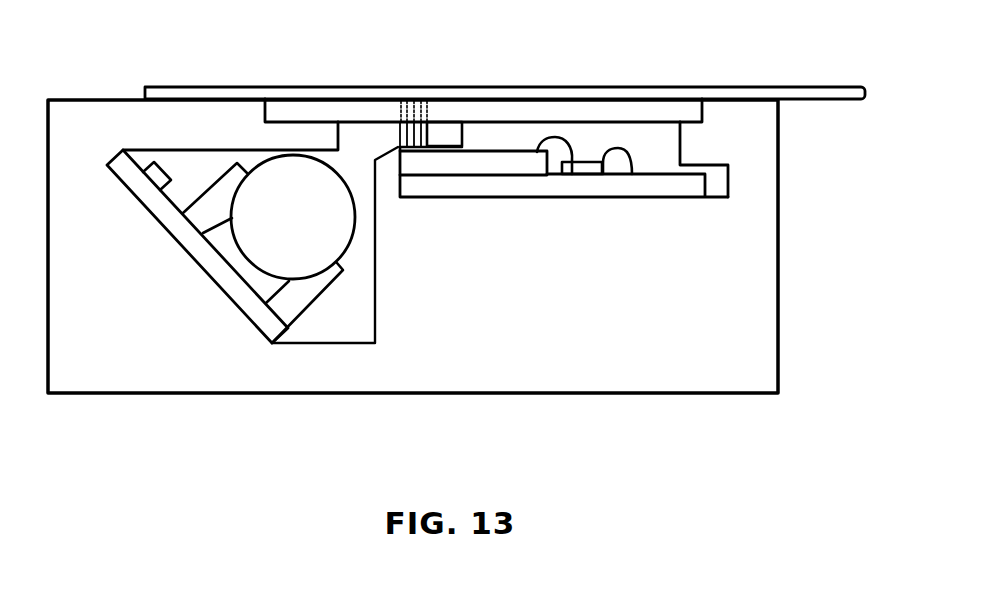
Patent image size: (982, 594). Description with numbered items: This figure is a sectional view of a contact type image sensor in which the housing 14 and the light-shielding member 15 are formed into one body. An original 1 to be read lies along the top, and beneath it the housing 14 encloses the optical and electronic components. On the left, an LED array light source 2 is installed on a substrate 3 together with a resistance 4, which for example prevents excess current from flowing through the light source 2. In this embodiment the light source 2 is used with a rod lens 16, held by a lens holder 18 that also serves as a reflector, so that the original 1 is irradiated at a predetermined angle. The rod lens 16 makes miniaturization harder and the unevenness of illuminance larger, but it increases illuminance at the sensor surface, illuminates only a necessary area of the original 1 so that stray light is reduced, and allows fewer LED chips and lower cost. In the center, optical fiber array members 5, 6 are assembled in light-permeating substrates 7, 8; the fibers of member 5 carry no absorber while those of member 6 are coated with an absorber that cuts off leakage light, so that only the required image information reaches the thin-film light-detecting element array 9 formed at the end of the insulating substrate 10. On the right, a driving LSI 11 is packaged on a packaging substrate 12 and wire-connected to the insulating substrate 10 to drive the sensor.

The original 1 is at (817, 88).
The light source 2 is at (241, 275).
The substrate 3 is at (167, 222).
The resistance 4 is at (159, 167).
The optical fiber array member 5 is at (413, 110).
The optical fiber array member 6 is at (427, 133).
The light-permeating substrate 7 is at (573, 105).
The light-permeating substrate 8 is at (458, 140).
The thin-film light-detecting element array 9 is at (417, 151).
The insulating substrate 10 is at (518, 168).
The driving LSI 11 is at (588, 165).
The packaging substrate 12 is at (628, 190).
The housing 14 is at (440, 362).
The light-shielding member 15 is at (370, 153).
The rod lens 16 is at (346, 228).
The lens holder 18 is at (306, 304).